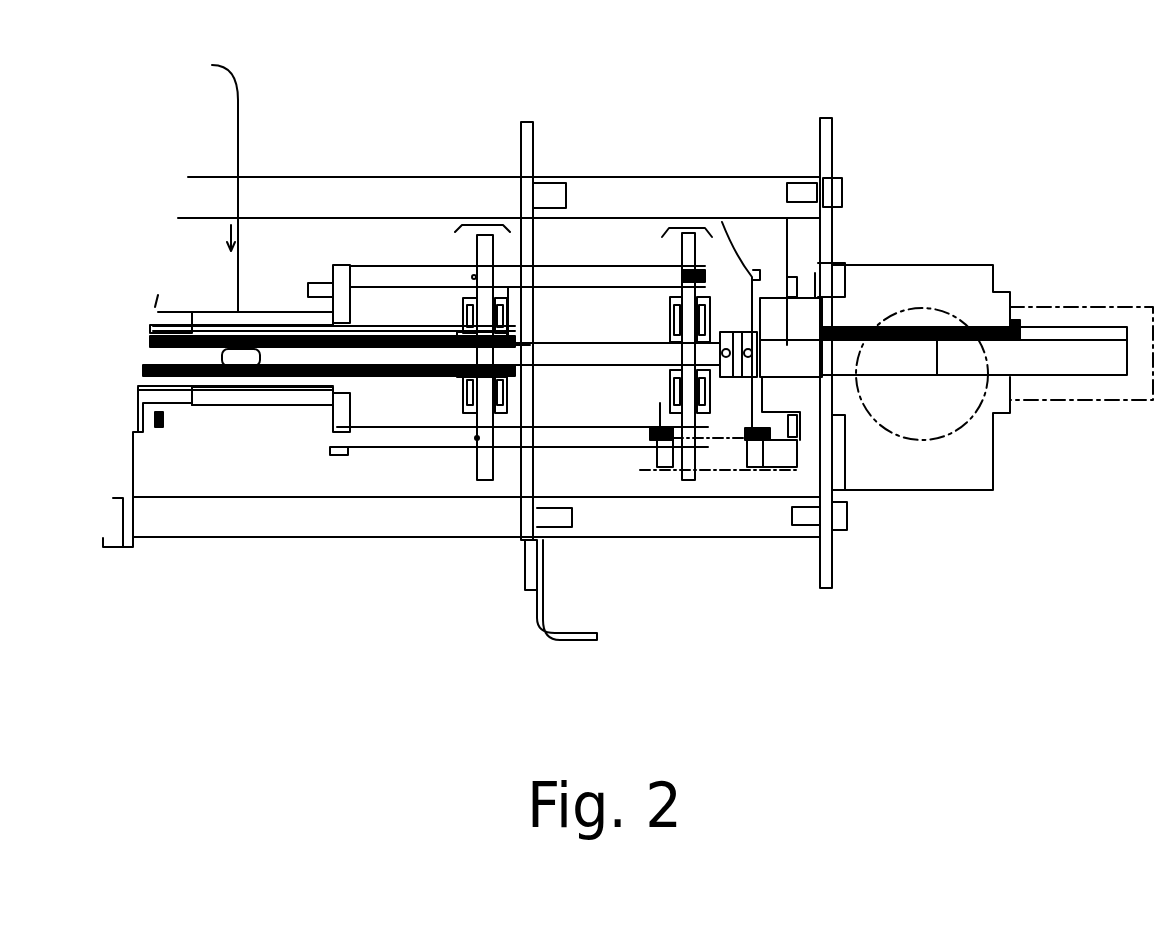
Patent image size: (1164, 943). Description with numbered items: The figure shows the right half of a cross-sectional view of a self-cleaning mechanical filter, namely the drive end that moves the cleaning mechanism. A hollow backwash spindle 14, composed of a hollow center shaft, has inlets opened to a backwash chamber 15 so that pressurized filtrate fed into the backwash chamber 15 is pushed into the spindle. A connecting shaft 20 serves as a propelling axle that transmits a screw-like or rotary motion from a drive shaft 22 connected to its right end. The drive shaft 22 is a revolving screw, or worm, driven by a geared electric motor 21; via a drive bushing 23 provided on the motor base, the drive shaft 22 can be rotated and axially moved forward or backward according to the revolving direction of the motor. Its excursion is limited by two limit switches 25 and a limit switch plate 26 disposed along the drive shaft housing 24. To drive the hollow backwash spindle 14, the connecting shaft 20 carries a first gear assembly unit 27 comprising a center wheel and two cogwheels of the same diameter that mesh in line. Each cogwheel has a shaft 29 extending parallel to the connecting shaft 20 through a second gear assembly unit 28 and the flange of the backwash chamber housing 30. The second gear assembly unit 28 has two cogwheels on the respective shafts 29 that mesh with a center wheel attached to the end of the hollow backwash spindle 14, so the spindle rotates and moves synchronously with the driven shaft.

The hollow backwash spindle 14 is at (398, 327).
The backwash chamber 15 is at (268, 312).
The connecting shaft 20 is at (597, 353).
The geared electric motor 21 is at (945, 283).
The drive shaft 22 is at (792, 290).
The drive bushing 23 is at (812, 302).
The drive shaft housing 24 is at (828, 547).
The limit switches 25 is at (782, 470).
The limit switch plate 26 is at (728, 225).
The first gear assembly unit 27 is at (687, 223).
The second gear assembly unit 28 is at (480, 222).
The cogwheel shafts 29 is at (618, 420).
The backwash chamber housing 30 is at (265, 407).